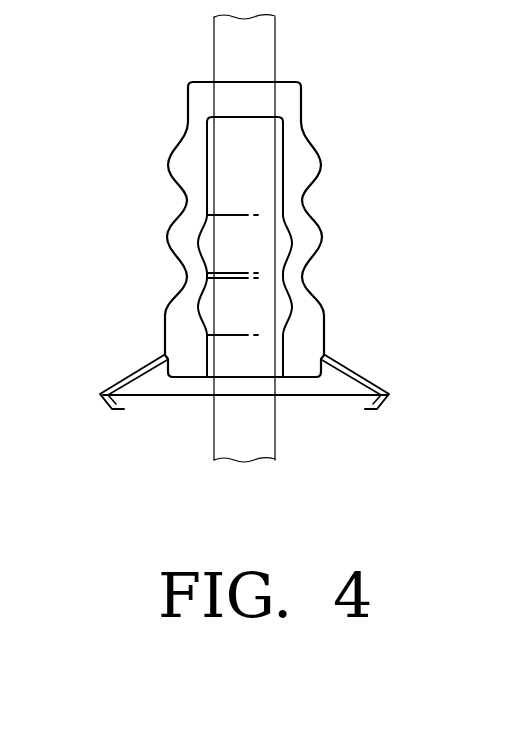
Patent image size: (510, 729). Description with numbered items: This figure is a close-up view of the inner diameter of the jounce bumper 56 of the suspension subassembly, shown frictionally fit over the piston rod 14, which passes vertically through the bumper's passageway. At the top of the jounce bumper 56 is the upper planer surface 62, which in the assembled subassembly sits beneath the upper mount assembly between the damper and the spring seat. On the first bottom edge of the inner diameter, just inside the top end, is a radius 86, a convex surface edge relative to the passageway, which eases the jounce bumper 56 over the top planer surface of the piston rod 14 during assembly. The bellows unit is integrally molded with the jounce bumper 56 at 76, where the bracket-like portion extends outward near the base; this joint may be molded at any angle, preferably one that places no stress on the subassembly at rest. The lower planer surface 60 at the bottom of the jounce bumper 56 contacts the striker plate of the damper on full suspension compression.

The piston rod 14 is at (229, 431).
The jounce bumper 56 is at (177, 327).
The lower planer surface 60 is at (298, 378).
The upper planer surface 62 is at (206, 81).
The molding location of bellows unit to jounce bumper 76 is at (327, 353).
The radius 86 is at (276, 110).